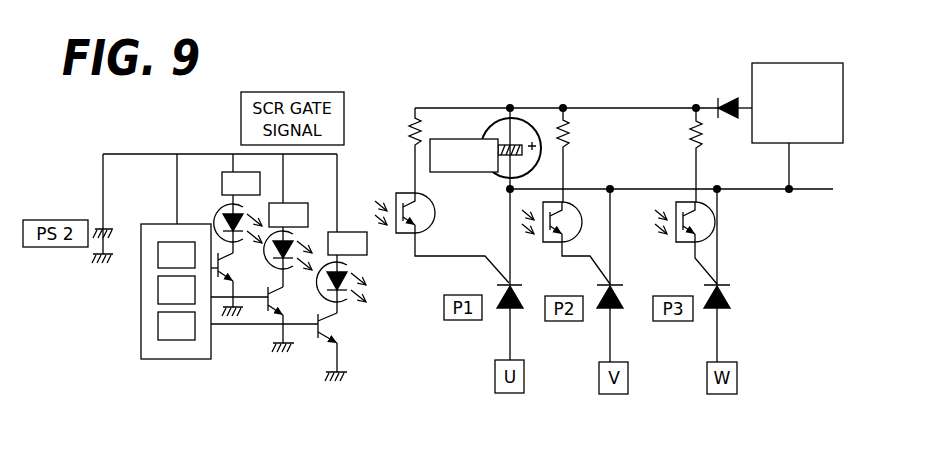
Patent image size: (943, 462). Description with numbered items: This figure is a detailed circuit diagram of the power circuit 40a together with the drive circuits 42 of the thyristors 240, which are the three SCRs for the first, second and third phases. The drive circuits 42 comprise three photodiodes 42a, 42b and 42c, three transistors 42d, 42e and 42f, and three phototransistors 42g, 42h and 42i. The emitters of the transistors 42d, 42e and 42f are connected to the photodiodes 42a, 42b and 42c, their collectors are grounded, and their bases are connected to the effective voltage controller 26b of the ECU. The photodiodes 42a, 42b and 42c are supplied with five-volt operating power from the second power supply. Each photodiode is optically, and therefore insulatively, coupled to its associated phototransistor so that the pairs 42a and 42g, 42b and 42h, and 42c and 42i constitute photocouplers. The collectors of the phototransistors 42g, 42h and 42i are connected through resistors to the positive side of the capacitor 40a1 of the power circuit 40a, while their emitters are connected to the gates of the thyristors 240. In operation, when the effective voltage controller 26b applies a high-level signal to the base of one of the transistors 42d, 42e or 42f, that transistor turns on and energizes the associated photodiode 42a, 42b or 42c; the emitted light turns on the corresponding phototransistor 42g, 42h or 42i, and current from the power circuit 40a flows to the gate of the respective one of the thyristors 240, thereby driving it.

The drive circuits 42 is at (776, 50).
The power circuit 40a is at (458, 139).
The capacitor 40a1 is at (521, 130).
The photodiode 42a is at (220, 214).
The photodiode 42b is at (308, 238).
The photodiode 42c is at (349, 302).
The transistor 42d is at (237, 266).
The transistor 42e is at (284, 298).
The transistor 42f is at (334, 322).
The phototransistor 42g is at (433, 215).
The phototransistor 42h is at (566, 201).
The phototransistor 42i is at (713, 224).
The effective voltage controller 26b is at (141, 321).
The thyristors 240 is at (157, 341).